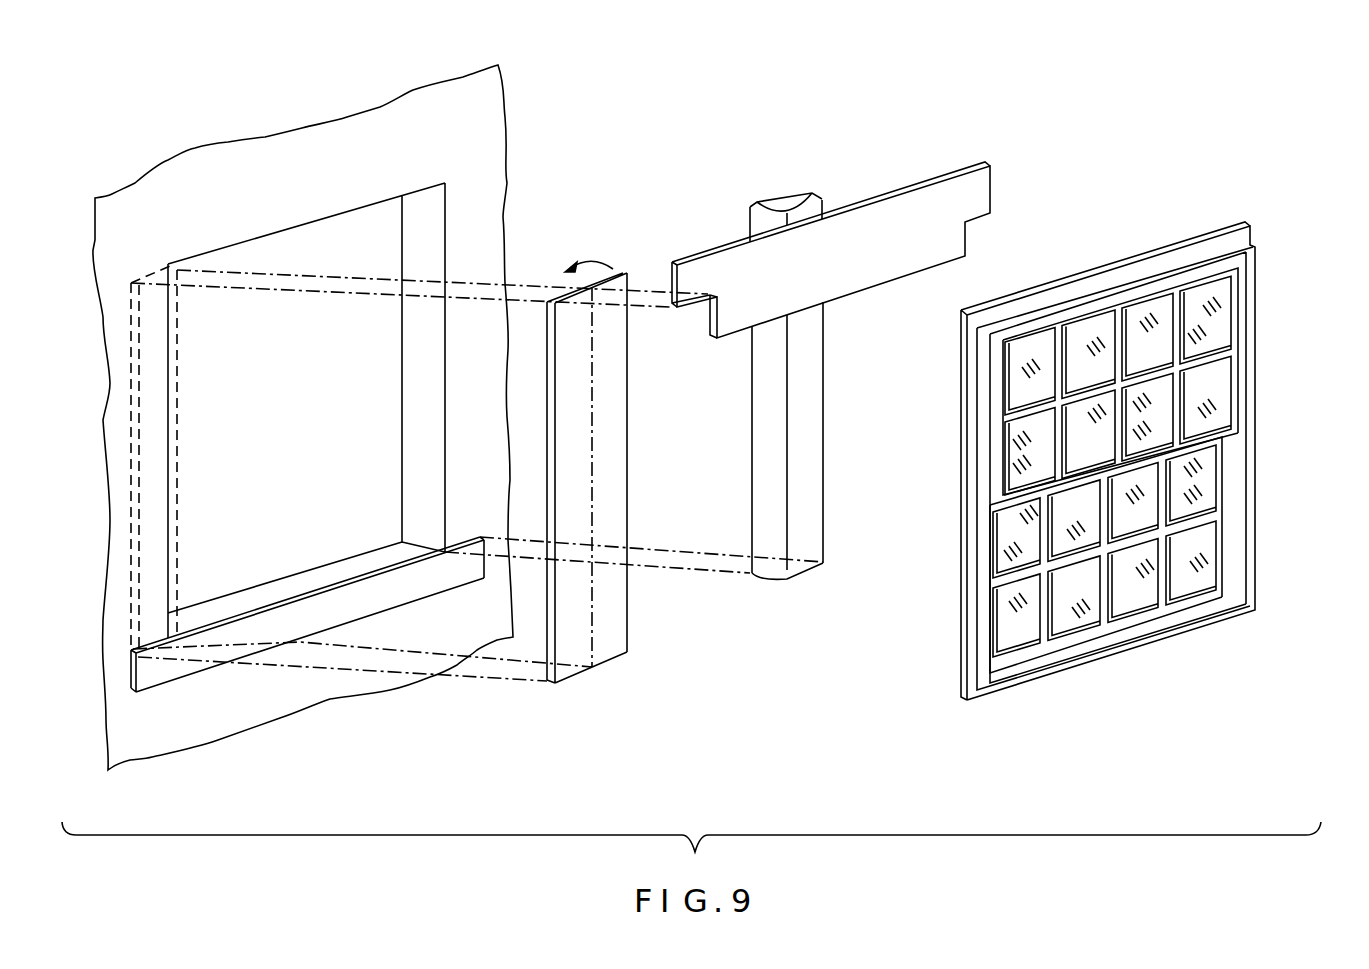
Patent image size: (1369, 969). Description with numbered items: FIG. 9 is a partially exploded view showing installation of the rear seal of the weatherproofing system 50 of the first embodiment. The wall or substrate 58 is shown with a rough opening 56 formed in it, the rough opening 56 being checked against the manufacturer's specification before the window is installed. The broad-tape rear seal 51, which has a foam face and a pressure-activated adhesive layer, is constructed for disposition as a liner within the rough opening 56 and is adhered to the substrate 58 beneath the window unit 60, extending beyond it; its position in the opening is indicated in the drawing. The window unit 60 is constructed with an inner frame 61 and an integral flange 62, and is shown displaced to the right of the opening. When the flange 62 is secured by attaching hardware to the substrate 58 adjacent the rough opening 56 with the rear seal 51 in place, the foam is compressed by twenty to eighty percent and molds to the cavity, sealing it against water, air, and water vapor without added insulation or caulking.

The weatherproofing system 50 is at (933, 178).
The rear seal 51 is at (895, 257).
The rough opening 56 is at (307, 224).
The substrate 58 is at (475, 137).
The window unit 60 is at (1231, 462).
The inner frame 61 is at (963, 668).
The integral flange 62 is at (1243, 234).